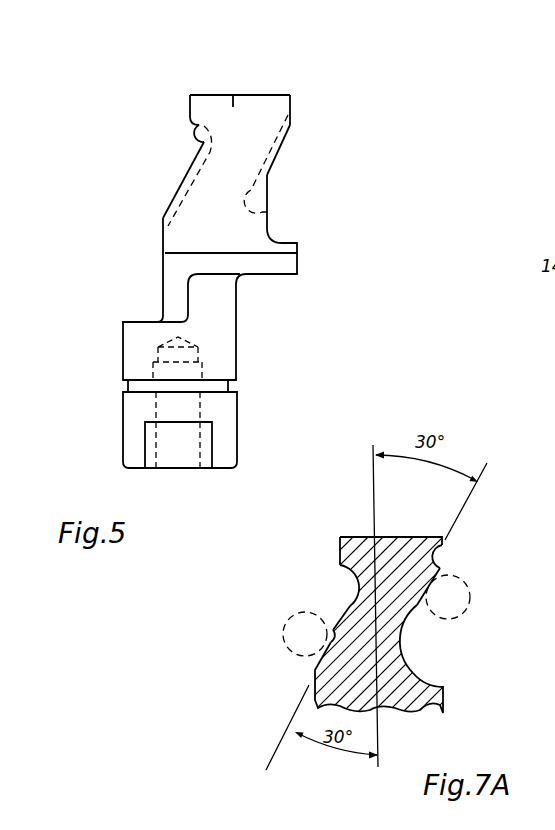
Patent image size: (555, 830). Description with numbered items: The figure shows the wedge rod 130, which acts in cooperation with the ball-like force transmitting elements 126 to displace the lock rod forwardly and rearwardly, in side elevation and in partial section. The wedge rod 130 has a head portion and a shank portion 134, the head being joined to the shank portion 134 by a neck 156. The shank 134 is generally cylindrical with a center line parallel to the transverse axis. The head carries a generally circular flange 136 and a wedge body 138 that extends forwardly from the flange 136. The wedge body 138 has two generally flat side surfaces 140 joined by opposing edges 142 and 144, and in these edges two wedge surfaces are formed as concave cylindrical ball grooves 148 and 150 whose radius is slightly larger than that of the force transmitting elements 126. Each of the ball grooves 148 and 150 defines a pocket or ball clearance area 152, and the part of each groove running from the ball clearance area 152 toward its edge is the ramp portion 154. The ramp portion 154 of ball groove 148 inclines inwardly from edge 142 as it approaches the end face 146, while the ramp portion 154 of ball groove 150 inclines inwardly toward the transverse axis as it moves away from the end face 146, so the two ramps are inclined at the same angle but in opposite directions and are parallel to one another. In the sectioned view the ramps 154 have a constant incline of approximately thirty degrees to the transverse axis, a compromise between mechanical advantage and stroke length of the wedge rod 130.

In FIG. 7A, the force transmitting element 126 is at (290, 622).
In FIG. 5, the wedge rod 130 is at (145, 298).
In FIG. 5, the shank portion 134 is at (218, 352).
In FIG. 5, the flange 136 is at (273, 262).
In FIG. 5, the wedge body 138 is at (238, 90).
In FIG. 5, the side surface 140 is at (235, 92).
In FIG. 5, the edge 142 is at (163, 237).
In FIG. 5, the edge 144 is at (290, 107).
In FIG. 5, the end face 146 is at (272, 92).
In FIG. 5, the ball groove 148 is at (172, 210).
In FIG. 5, the ball groove 150 is at (273, 153).
In FIG. 5, the ball clearance area 152 is at (203, 142).
In FIG. 7A, the ball clearance area 152 is at (353, 537).
In FIG. 7A, the ramp portion 154 is at (443, 545).
In FIG. 5, the neck 156 is at (207, 298).